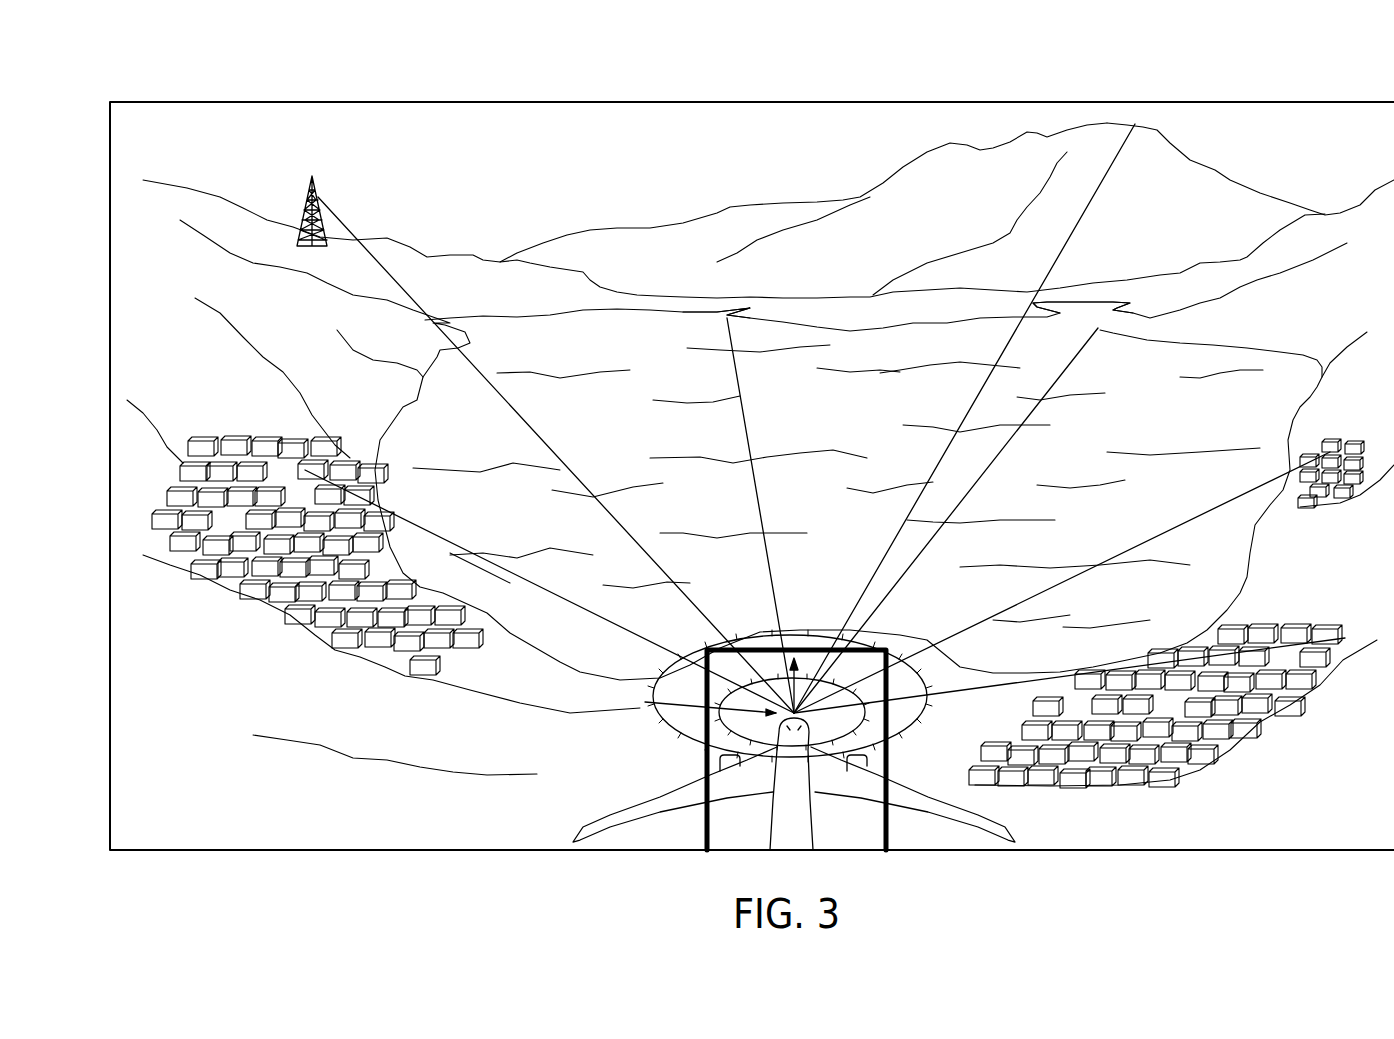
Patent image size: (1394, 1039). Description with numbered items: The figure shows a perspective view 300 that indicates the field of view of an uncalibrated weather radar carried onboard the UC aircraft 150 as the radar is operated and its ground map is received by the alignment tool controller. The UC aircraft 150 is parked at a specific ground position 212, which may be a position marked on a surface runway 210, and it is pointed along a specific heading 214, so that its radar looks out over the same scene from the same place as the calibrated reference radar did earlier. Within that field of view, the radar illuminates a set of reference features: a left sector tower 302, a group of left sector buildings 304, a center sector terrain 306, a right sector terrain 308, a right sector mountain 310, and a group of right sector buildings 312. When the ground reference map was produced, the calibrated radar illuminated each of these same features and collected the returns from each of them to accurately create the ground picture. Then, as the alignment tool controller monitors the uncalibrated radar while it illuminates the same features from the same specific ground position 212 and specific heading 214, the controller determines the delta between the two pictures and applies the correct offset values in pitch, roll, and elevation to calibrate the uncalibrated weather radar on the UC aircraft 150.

The perspective view 300 is at (147, 90).
The left sector tower 302 is at (310, 205).
The group of left sector buildings 304 is at (313, 438).
The center sector terrain 306 is at (728, 304).
The right sector terrain 308 is at (1097, 320).
The right sector mountain 310 is at (1134, 103).
The group of right sector buildings 312 is at (1336, 515).
The specific heading 214 is at (791, 650).
The specific ground position 212 is at (690, 703).
The UC aircraft 150 is at (680, 796).
The surface runway 210 is at (707, 828).